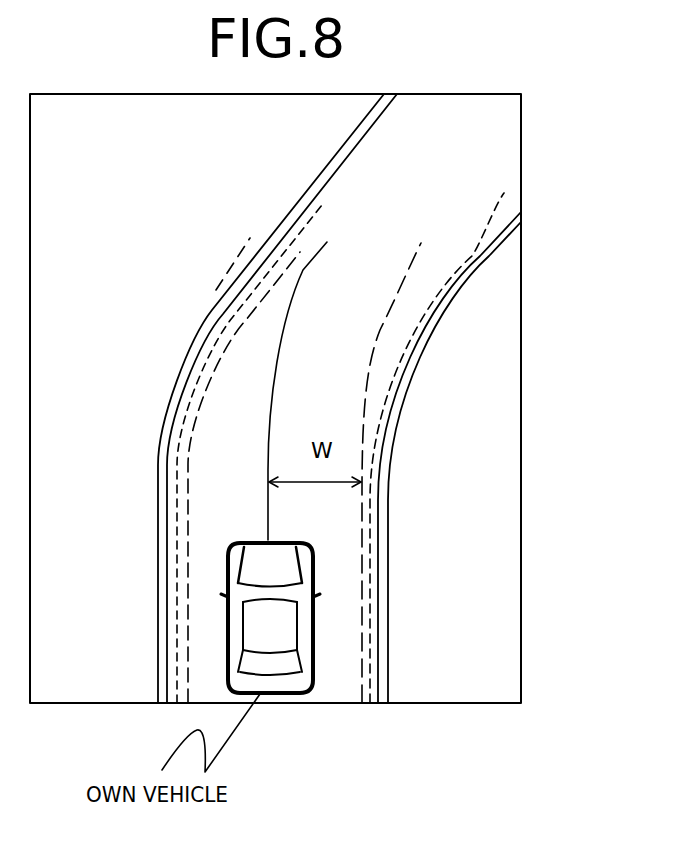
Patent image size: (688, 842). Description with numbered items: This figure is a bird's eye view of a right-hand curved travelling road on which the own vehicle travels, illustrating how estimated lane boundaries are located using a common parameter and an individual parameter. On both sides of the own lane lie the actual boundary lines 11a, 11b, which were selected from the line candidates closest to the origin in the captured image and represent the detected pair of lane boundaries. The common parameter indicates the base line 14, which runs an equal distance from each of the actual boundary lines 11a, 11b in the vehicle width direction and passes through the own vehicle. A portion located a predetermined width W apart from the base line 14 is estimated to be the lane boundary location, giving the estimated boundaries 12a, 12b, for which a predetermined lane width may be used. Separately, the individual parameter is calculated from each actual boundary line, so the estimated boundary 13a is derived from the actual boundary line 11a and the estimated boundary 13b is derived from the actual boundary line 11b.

The actual boundary line 11a is at (170, 430).
The actual boundary line 11b is at (392, 435).
The estimated boundary 12a is at (218, 288).
The estimated boundary 12b is at (378, 312).
The estimated boundary 13a is at (308, 226).
The estimated boundary 13b is at (504, 193).
The base line 14 is at (268, 482).